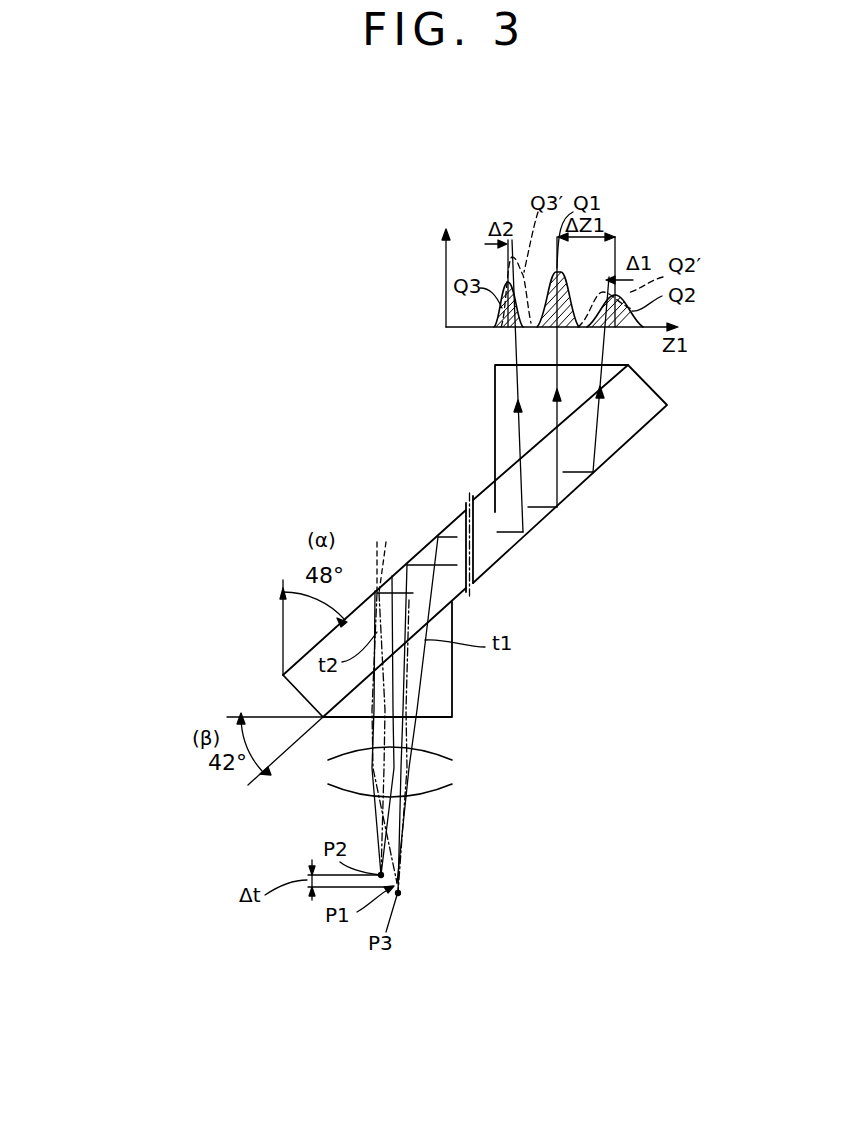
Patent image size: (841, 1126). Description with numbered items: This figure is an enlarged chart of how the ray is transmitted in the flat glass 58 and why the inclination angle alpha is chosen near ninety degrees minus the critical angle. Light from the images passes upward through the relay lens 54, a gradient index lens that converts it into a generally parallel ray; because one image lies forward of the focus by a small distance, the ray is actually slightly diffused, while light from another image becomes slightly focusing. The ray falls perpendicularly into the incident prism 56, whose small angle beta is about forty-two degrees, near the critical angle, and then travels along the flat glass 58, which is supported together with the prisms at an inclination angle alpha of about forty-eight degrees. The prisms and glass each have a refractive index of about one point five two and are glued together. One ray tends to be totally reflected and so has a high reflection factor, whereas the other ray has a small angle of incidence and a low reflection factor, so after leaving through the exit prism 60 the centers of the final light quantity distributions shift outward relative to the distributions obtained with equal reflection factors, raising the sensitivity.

The relay lens 54 is at (452, 772).
The incident prism 56 is at (447, 687).
The flat glass 58 is at (512, 550).
The exit prism 60 is at (502, 395).